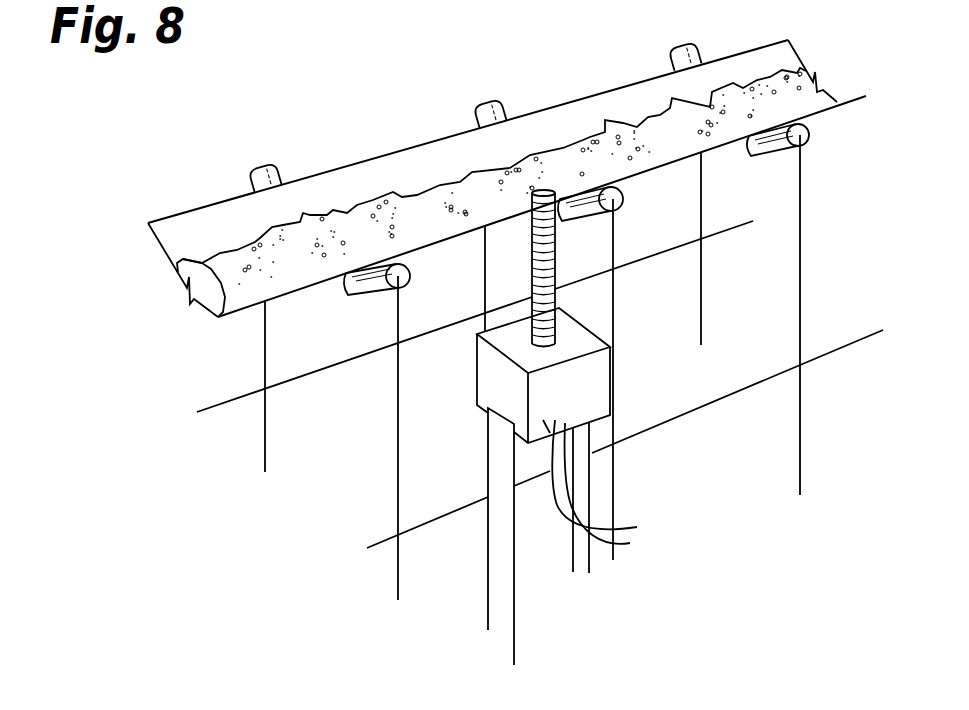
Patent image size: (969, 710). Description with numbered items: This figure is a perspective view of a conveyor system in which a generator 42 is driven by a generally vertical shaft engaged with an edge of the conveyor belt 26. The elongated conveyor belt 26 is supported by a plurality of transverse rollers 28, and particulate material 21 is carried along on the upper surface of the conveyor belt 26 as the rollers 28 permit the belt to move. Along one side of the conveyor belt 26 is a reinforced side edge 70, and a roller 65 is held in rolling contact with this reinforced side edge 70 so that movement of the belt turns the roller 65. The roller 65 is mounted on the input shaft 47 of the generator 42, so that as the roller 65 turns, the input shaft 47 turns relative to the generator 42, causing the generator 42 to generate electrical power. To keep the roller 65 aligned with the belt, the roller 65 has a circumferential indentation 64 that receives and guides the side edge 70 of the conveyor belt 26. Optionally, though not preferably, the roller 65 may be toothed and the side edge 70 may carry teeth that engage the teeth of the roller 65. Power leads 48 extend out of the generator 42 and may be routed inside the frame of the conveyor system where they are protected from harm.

The particulate material 21 is at (800, 66).
The conveyor belt 26 is at (787, 41).
The rollers 28 is at (272, 166).
The generator 42 is at (600, 367).
The input shaft 47 is at (558, 312).
The power leads 48 is at (563, 478).
The circumferential indentation 64 is at (529, 211).
The roller 65 is at (548, 261).
The reinforced side edge 70 is at (823, 113).